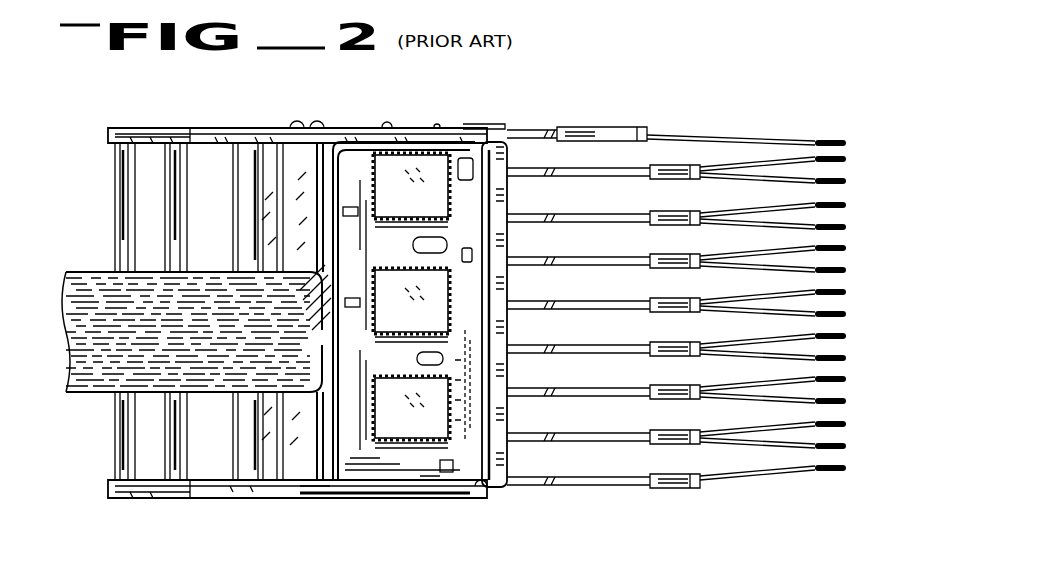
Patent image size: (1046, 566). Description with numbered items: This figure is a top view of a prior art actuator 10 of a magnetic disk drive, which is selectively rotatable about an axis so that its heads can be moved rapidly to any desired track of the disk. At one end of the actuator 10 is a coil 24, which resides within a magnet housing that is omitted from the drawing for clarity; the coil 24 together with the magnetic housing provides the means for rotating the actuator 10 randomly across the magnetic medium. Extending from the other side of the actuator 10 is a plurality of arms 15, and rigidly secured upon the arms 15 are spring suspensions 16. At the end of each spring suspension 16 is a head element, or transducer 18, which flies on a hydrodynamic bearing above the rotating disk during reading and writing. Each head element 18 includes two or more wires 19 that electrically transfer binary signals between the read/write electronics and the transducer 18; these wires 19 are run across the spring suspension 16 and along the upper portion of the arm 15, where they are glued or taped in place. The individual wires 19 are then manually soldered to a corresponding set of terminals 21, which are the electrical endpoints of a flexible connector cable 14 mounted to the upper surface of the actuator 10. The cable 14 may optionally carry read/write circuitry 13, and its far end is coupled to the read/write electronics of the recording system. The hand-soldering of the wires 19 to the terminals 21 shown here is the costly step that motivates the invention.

The actuator 10 is at (225, 131).
The read/write circuitry 13 is at (325, 345).
The flexible connector cable 14 is at (90, 273).
The arms 15 is at (598, 128).
The spring suspensions 16 is at (745, 162).
The head element 18 is at (850, 157).
The wires 19 is at (525, 131).
The terminals 21 is at (477, 325).
The coil 24 is at (115, 196).